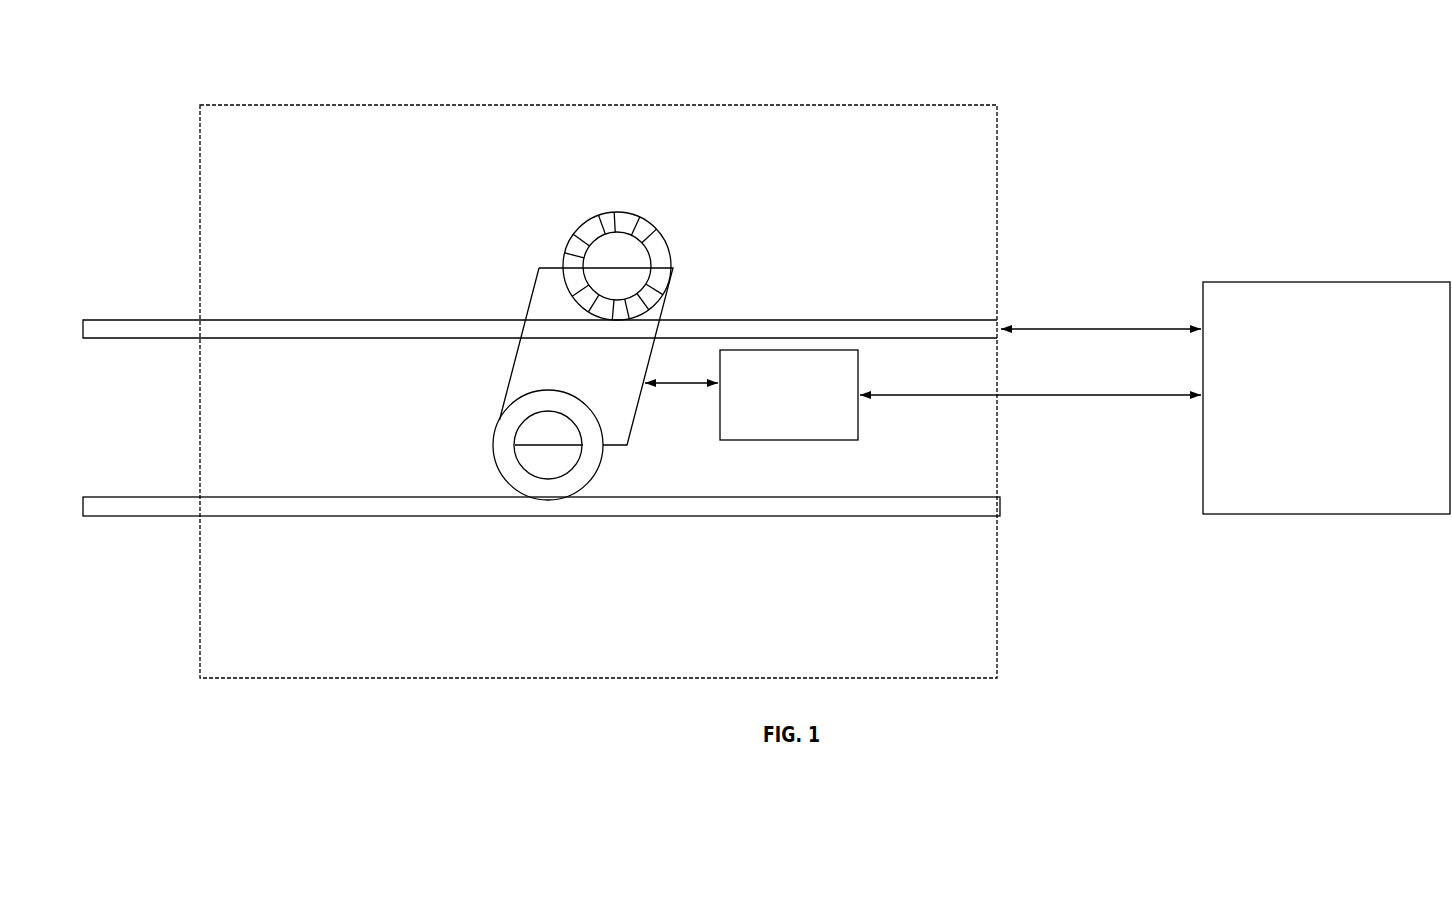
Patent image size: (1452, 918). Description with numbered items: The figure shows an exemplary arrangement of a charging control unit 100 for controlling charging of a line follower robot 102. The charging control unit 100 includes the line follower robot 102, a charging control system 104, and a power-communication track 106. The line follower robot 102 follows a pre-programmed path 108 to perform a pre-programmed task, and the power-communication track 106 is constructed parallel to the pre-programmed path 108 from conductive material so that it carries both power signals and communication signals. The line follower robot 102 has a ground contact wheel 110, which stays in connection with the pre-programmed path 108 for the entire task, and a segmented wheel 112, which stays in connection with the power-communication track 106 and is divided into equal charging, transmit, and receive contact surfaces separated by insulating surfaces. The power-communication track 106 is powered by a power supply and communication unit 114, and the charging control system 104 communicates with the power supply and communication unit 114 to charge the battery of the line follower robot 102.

The charging control unit 100 is at (710, 64).
The line follower robot 102 is at (587, 356).
The charging control system 104 is at (751, 395).
The power-communication track 106 is at (857, 318).
The pre-programmed path 108 is at (833, 518).
The ground contact wheel 110 is at (490, 445).
The segmented wheel 112 is at (541, 232).
The power supply and communication unit 114 is at (1155, 398).